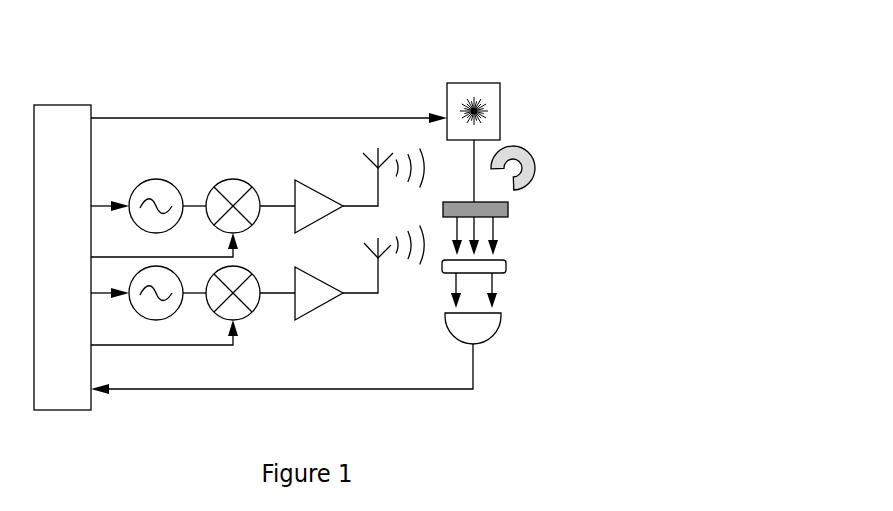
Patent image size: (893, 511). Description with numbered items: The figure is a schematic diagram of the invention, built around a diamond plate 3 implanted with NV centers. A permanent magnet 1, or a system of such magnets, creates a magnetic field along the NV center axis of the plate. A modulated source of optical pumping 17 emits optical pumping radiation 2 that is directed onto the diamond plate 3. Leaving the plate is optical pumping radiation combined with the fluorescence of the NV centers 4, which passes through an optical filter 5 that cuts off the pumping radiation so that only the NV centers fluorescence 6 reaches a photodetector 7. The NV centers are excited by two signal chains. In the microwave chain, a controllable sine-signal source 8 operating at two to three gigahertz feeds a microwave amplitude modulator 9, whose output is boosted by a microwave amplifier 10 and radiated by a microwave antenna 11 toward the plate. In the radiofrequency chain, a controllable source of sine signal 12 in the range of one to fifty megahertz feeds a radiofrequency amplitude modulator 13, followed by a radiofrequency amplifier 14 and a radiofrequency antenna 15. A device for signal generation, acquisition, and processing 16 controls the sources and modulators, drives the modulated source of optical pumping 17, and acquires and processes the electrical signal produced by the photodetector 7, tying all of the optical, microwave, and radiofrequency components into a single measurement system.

The permanent magnet 1 is at (538, 163).
The optical pumping radiation 2 is at (482, 190).
The diamond plate 3 is at (510, 215).
The combined pumping radiation and fluorescence 4 is at (498, 237).
The optical filter 5 is at (512, 267).
The NV centers fluorescence 6 is at (500, 287).
The photodetector 7 is at (502, 337).
The controllable microwave sine-signal source 8 is at (152, 170).
The microwave amplitude modulator 9 is at (228, 170).
The microwave amplifier 10 is at (292, 178).
The microwave antenna 11 is at (387, 147).
The controllable radiofrequency sine-signal source 12 is at (158, 328).
The radiofrequency amplitude modulator 13 is at (248, 323).
The radiofrequency amplifier 14 is at (321, 314).
The radiofrequency antenna 15 is at (387, 266).
The signal generation, acquisition, and processing device 16 is at (240, 257).
The modulated source of optical pumping 17 is at (474, 125).